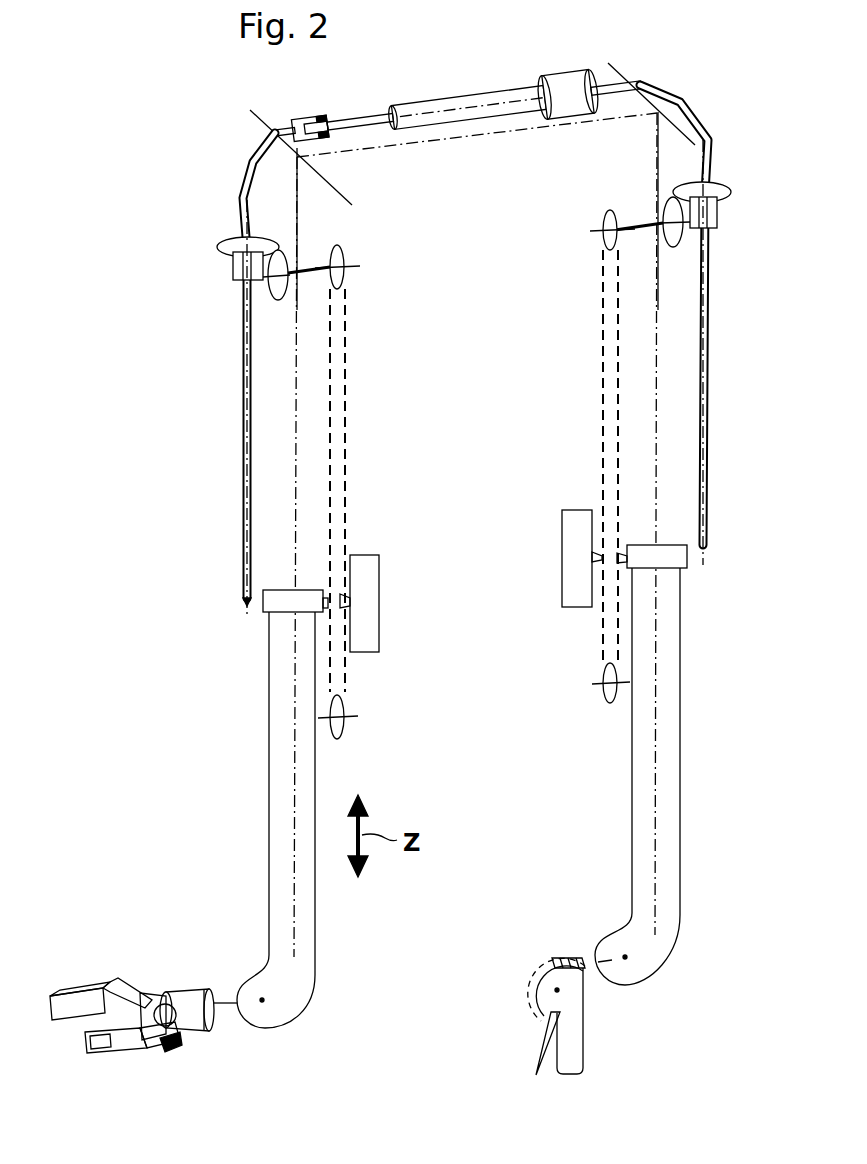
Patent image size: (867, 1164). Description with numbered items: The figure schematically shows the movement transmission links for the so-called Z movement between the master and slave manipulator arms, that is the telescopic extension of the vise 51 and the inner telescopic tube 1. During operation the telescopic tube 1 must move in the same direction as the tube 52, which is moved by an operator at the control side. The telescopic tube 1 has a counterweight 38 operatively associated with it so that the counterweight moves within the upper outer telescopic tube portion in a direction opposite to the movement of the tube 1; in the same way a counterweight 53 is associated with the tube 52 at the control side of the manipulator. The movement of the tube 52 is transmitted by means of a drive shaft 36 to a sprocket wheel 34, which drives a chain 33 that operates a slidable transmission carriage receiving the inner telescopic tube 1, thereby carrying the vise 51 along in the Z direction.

The inner telescopic tube 1 is at (288, 757).
The chain 33 is at (346, 350).
The sprocket wheel 34 is at (346, 249).
The drive shaft 36 is at (246, 353).
The counterweight 38 is at (368, 573).
The vise 51 is at (78, 1007).
The tube 52 is at (656, 737).
The counterweight 53 is at (572, 590).